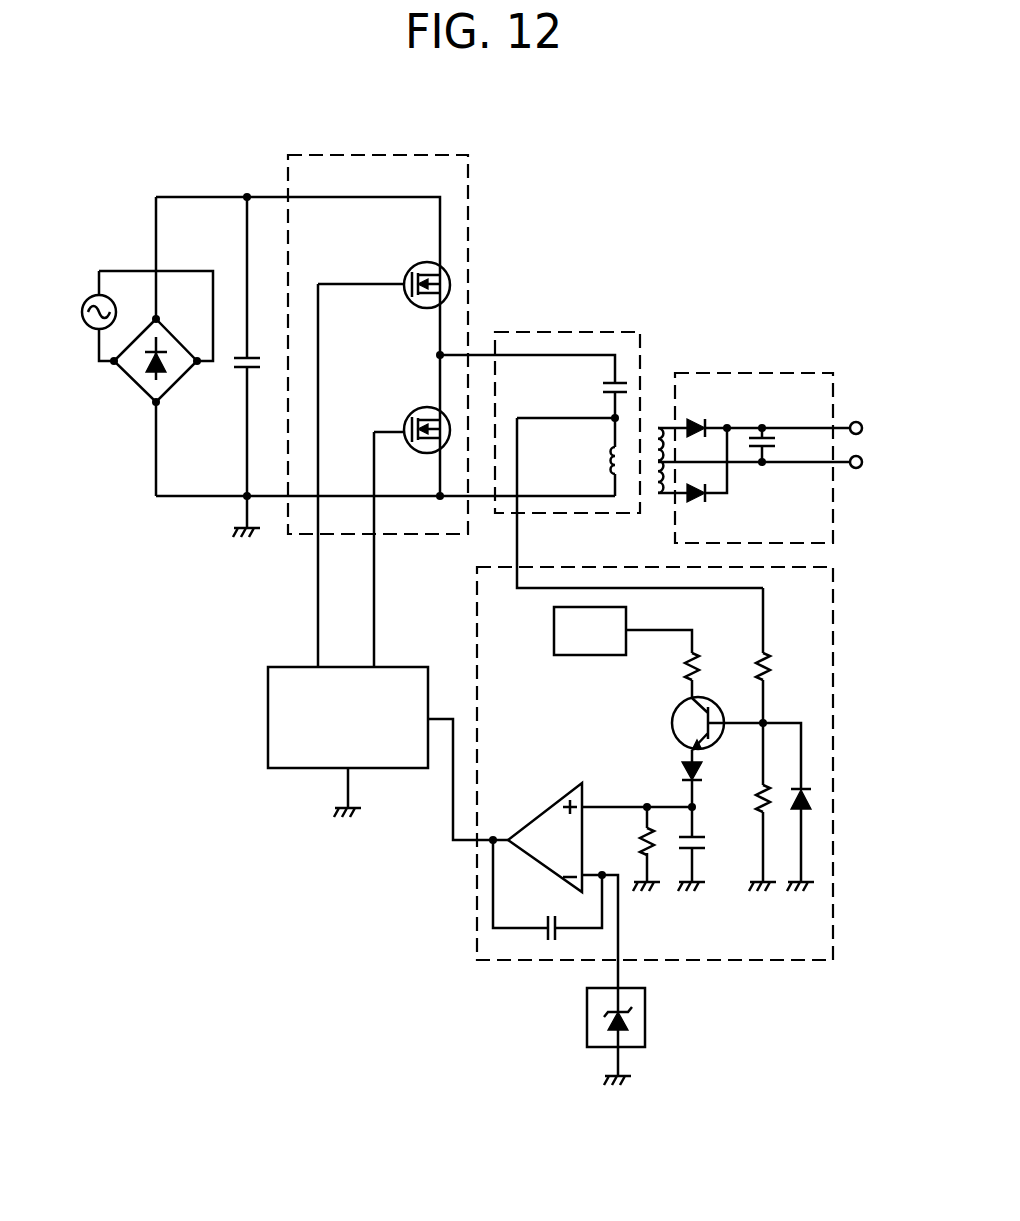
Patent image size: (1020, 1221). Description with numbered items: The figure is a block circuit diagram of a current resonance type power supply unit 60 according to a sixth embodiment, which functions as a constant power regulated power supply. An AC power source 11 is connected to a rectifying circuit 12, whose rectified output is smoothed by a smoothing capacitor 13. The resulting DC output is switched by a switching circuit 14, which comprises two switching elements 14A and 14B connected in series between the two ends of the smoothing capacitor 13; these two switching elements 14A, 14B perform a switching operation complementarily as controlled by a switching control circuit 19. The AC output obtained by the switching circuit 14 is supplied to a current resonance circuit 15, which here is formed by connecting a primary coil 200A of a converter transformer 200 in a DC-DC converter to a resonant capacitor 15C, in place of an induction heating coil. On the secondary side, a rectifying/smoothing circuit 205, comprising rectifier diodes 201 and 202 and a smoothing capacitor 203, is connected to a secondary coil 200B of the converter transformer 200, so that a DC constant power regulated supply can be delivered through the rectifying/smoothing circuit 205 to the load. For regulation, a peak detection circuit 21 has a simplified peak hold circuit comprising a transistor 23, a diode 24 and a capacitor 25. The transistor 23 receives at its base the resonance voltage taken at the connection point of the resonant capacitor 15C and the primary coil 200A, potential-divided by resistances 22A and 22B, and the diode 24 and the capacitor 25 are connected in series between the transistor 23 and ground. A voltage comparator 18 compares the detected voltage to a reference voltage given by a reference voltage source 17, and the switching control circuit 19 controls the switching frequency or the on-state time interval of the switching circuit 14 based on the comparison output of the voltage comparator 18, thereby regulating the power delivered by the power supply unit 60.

The AC power source 11 is at (96, 296).
The rectifying circuit 12 is at (138, 390).
The smoothing capacitor 13 is at (229, 365).
The switching circuit 14 is at (410, 344).
The switching element 14A is at (421, 407).
The switching element 14B is at (419, 265).
The current resonance circuit 15 is at (567, 385).
The resonant capacitor 15C is at (600, 388).
The reference voltage source 17 is at (648, 1016).
The voltage comparator 18 is at (532, 820).
The switching control circuit 19 is at (268, 694).
The peak detection circuit 21 is at (663, 777).
The resistance 22A is at (757, 663).
The resistance 22B is at (757, 800).
The transistor 23 is at (675, 712).
The diode 24 is at (682, 770).
The capacitor 25 is at (700, 857).
The current resonance type power supply unit 60 is at (233, 828).
The converter transformer 200 is at (615, 447).
The primary coil 200A is at (606, 458).
The secondary coil 200B is at (656, 496).
The rectifier diode 201 is at (687, 417).
The rectifier diode 202 is at (687, 501).
The smoothing capacitor 203 is at (776, 445).
The rectifying/smoothing circuit 205 is at (754, 426).